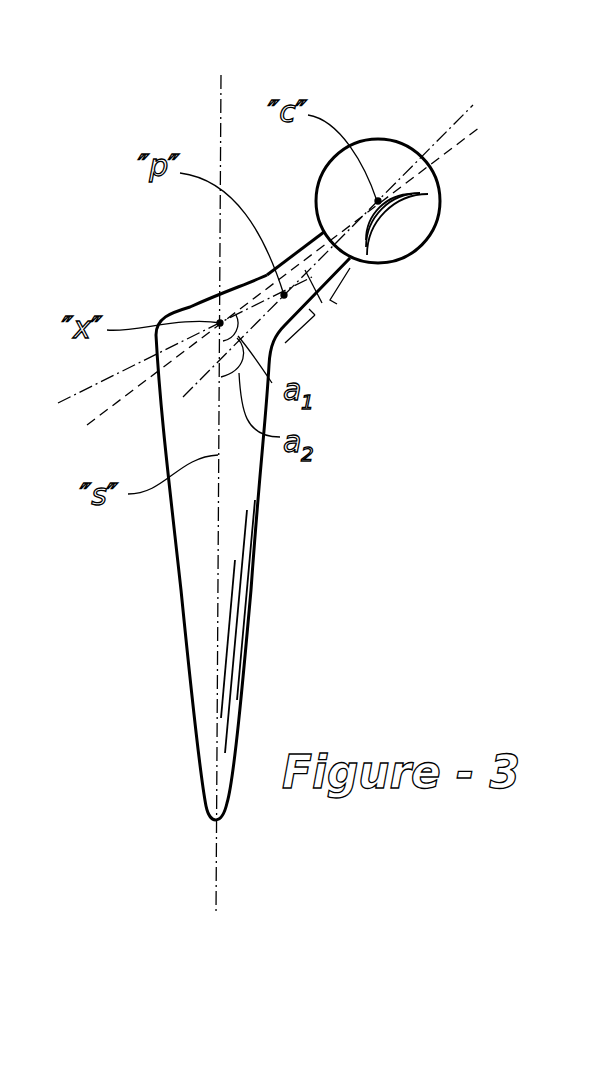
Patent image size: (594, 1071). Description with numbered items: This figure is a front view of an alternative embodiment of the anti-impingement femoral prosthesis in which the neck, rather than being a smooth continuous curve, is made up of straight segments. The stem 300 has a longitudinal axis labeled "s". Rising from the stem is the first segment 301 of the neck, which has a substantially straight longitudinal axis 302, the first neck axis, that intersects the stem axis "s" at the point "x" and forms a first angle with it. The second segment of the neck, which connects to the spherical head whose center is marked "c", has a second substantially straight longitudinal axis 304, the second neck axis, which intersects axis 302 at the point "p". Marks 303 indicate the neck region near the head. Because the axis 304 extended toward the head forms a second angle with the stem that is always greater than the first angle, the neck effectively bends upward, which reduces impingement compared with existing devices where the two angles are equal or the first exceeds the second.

The stem 300 is at (192, 588).
The first segment 301 is at (305, 333).
The substantially straight longitudinal axis 302 is at (247, 308).
The neck cross-section mark 303 is at (342, 287).
The second substantially straight longitudinal axis 304 is at (322, 305).